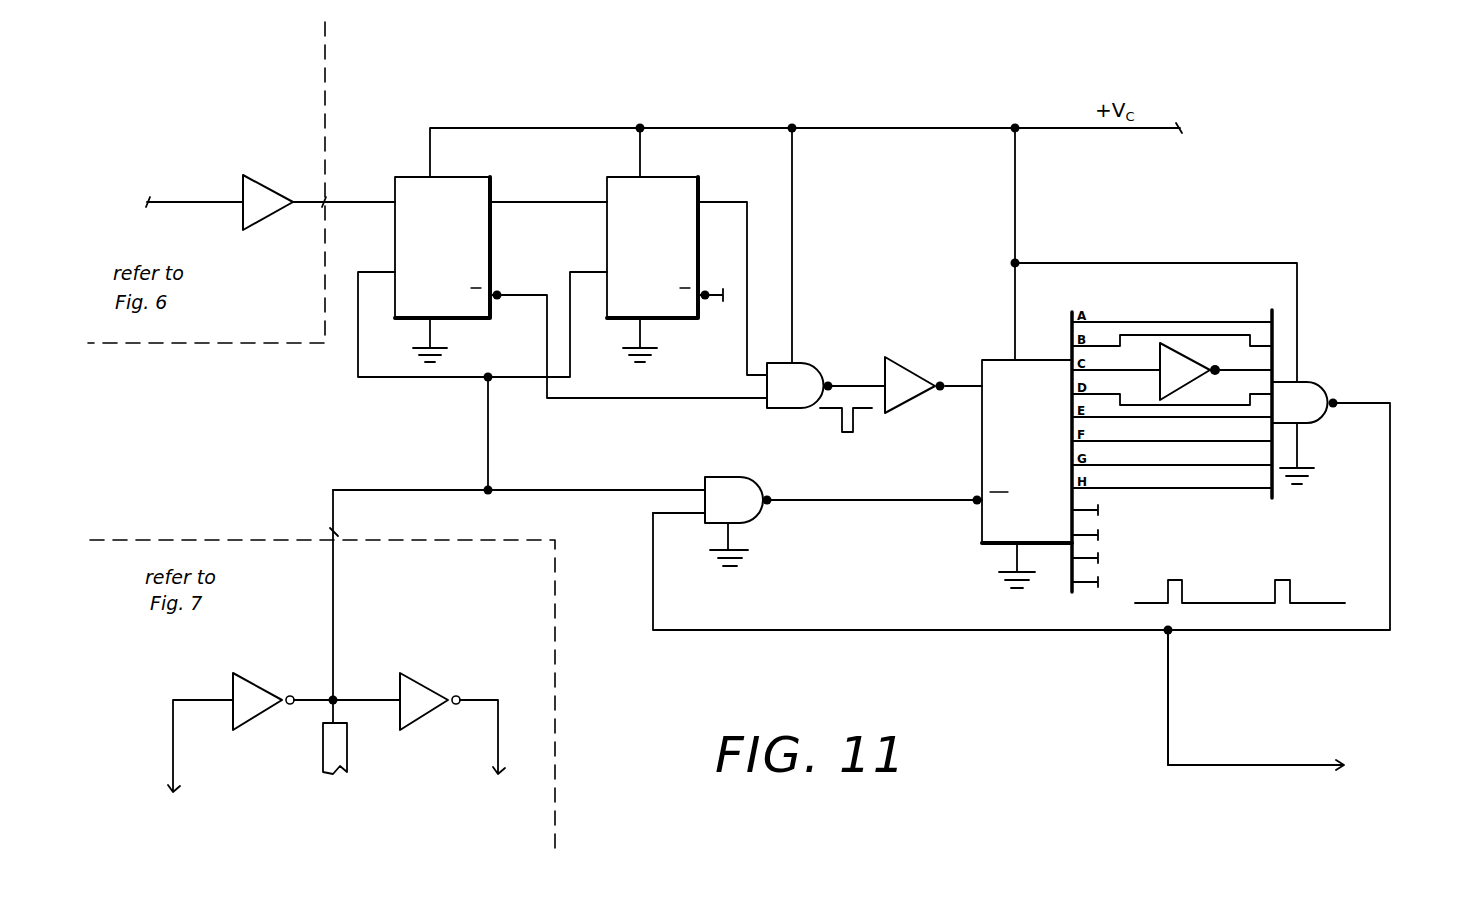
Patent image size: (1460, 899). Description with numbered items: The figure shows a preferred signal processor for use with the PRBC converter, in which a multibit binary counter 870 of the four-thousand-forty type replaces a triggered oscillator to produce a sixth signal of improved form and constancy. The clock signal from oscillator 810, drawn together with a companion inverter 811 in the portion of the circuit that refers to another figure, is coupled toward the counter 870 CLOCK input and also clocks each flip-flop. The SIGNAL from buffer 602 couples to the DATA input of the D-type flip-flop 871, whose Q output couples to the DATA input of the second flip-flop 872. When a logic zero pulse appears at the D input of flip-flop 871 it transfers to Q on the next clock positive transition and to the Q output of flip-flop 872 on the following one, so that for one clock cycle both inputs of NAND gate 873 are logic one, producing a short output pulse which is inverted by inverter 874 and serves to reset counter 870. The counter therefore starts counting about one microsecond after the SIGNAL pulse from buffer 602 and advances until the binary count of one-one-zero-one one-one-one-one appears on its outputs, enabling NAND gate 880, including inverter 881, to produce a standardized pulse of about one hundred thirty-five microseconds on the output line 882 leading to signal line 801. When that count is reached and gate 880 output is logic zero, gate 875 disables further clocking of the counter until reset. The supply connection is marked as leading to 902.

The buffer 602 is at (250, 195).
The D type flip-flop 871 is at (458, 200).
The second flip-flop 872 is at (657, 192).
The NAND gate 873 is at (797, 378).
The inverter 874 is at (905, 385).
The gate 875 is at (740, 495).
The multibit binary counter 870 is at (1037, 395).
The inverter 881 is at (1178, 368).
The NAND gate 880 is at (1310, 400).
The output line to signal line 801 882 is at (1330, 758).
The supply connection to 902 is at (1233, 127).
The signal line 801 is at (1385, 777).
The oscillator 810 is at (252, 697).
The inverter (Fig. 7) 811 is at (420, 700).